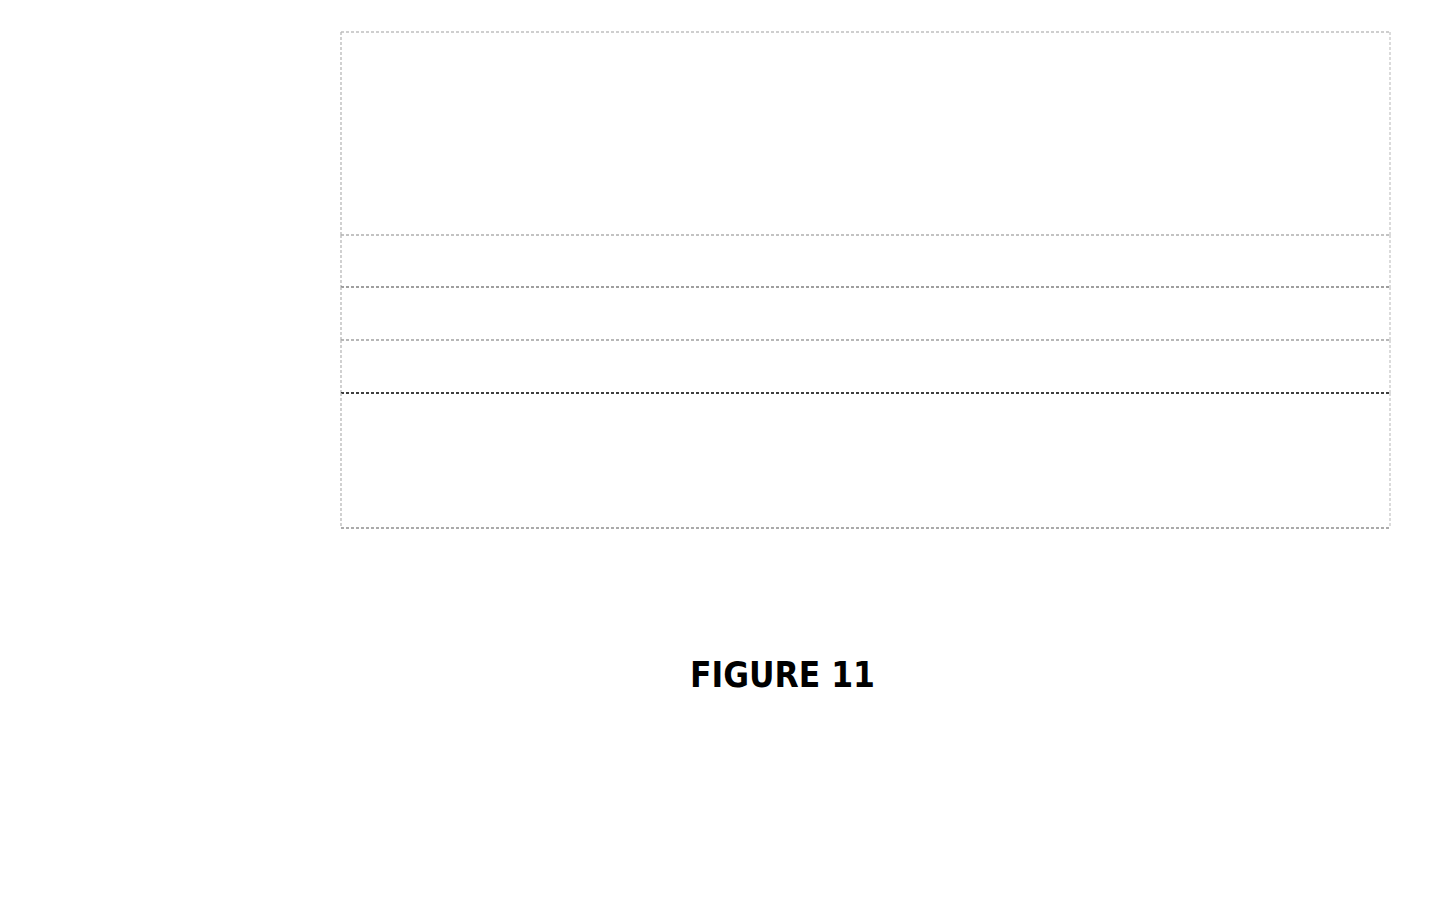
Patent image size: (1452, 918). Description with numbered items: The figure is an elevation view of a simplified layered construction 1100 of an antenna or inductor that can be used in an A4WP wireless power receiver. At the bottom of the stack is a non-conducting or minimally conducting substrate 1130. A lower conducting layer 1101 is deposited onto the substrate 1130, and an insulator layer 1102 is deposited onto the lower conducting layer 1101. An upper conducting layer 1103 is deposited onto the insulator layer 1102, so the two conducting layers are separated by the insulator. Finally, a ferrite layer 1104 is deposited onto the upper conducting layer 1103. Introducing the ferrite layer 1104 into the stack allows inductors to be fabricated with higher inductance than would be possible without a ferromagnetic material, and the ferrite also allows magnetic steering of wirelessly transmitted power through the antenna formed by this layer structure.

The layered ferrite structure 1100 is at (784, 361).
The ferrite layer 1104 is at (314, 134).
The upper conducting layer 1103 is at (314, 261).
The insulator layer 1102 is at (314, 314).
The lower conducting layer 1101 is at (314, 367).
The substrate 1130 is at (314, 462).